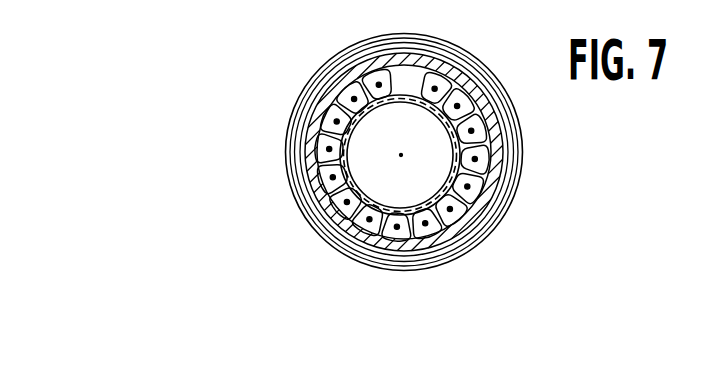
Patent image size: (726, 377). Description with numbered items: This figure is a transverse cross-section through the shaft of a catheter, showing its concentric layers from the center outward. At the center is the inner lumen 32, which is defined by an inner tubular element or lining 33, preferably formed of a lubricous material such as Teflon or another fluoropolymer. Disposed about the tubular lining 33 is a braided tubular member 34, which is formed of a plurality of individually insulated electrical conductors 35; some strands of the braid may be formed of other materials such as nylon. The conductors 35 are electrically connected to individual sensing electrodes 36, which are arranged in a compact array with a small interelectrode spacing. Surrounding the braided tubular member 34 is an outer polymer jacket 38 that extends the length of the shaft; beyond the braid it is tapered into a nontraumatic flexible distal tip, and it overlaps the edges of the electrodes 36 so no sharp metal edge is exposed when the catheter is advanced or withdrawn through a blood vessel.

The inner lumen 32 is at (449, 180).
The inner tubular element or lining 33 is at (478, 138).
The braided tubular member 34 is at (316, 165).
The individually insulated electrical conductors 35 is at (399, 90).
The sensing electrodes 36 is at (315, 125).
The outer polymer jacket 38 is at (480, 234).